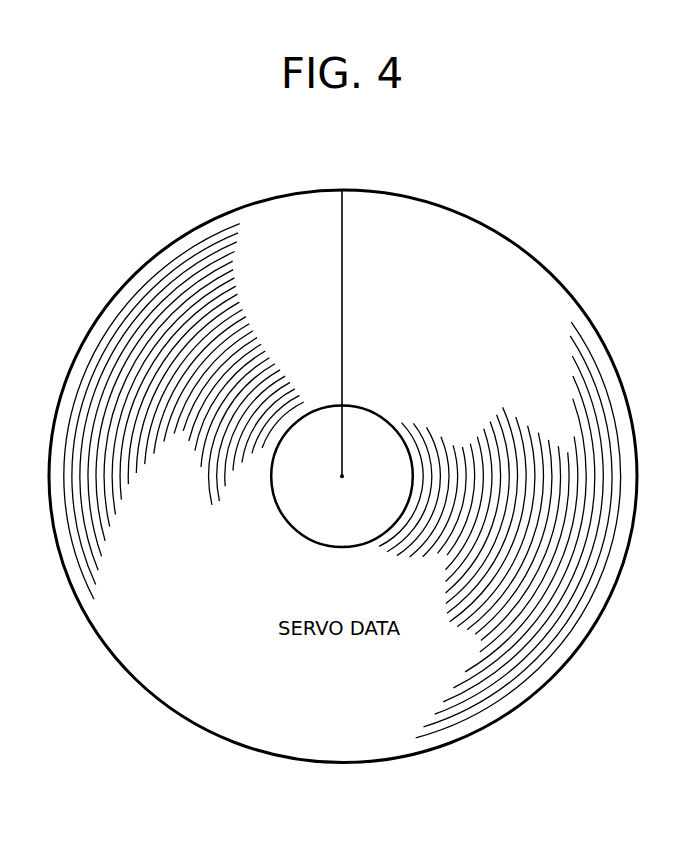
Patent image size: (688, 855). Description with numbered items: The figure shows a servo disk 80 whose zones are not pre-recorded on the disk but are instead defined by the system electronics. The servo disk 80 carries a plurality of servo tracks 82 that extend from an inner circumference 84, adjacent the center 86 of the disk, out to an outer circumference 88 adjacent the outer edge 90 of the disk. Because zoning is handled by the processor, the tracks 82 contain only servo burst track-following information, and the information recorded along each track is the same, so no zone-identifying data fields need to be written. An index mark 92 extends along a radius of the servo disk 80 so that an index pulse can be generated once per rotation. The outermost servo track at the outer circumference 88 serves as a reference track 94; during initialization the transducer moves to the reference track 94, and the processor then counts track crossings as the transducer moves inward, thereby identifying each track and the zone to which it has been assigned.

The servo disk 80 is at (165, 708).
The servo tracks 82 is at (507, 288).
The inner circumference 84 is at (385, 411).
The center 86 is at (342, 475).
The outer circumference 88 is at (553, 662).
The outer edge 90 is at (513, 712).
The index mark 92 is at (343, 225).
The reference track 94 is at (594, 593).